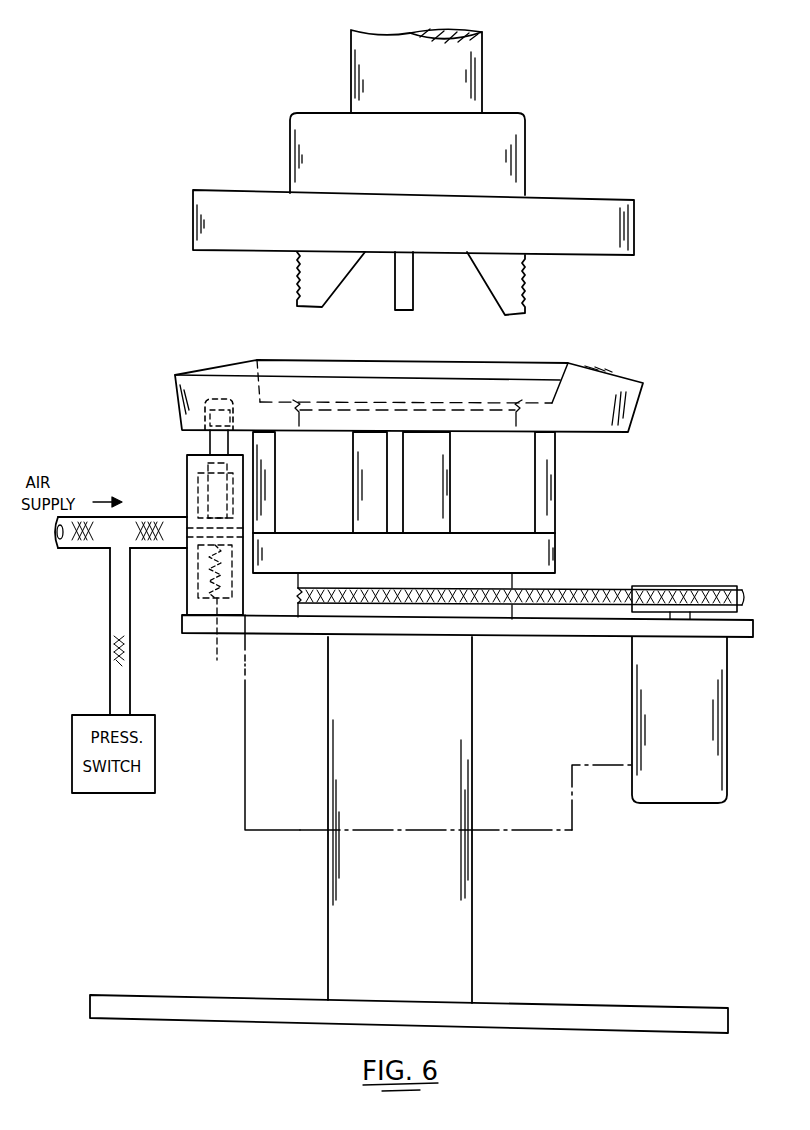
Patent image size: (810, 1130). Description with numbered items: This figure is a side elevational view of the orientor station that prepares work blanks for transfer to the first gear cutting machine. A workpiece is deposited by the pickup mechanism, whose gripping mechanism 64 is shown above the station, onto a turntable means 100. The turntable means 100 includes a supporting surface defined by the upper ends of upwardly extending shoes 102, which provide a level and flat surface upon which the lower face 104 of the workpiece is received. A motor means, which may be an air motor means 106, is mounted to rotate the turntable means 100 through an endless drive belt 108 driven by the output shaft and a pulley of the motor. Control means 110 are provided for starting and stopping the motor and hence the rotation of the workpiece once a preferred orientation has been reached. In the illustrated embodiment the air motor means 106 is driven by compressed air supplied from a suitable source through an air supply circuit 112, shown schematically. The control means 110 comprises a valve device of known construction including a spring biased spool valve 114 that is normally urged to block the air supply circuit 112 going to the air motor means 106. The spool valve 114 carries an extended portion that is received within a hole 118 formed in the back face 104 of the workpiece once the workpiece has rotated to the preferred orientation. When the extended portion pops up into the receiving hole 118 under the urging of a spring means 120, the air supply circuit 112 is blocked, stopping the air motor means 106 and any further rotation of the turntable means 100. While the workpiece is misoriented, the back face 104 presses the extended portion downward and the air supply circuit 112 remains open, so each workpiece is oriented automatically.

The gripping mechanism 64 is at (590, 226).
The turntable means 100 is at (532, 552).
The upwardly extending shoes 102 is at (268, 513).
The lower face of a workpiece 104 is at (603, 435).
The air motor means 106 is at (663, 708).
The endless drive belt 108 is at (607, 588).
The control means 110 is at (173, 469).
The air supply circuit 112 is at (246, 743).
The spring biased spool valve 114 is at (198, 552).
The hole 118 is at (210, 415).
The spring means 120 is at (195, 631).